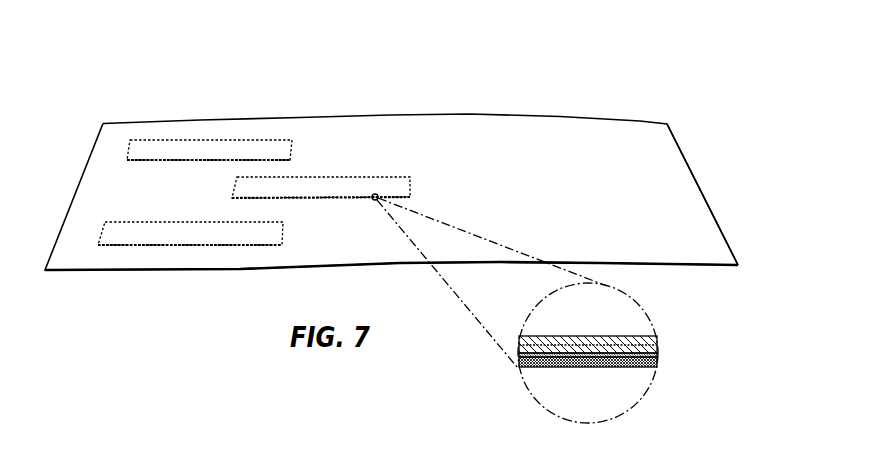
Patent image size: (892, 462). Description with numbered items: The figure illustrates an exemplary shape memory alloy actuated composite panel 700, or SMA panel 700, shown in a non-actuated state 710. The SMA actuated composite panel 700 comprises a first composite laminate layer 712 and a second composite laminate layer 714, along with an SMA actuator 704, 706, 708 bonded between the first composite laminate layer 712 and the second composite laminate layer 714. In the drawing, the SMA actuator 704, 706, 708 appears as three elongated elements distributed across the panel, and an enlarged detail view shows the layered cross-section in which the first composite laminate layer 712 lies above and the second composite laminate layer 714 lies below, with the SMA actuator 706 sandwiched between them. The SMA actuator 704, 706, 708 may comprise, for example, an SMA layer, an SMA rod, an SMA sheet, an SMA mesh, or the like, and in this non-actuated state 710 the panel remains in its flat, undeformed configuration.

The shape memory alloy actuated composite panel 700 is at (626, 56).
The SMA actuator 704 is at (173, 150).
The SMA actuator 706 is at (357, 187).
The SMA actuator 708 is at (148, 233).
The non-actuated state 710 is at (693, 167).
The first composite laminate layer 712 is at (505, 127).
The second composite laminate layer 714 is at (658, 360).